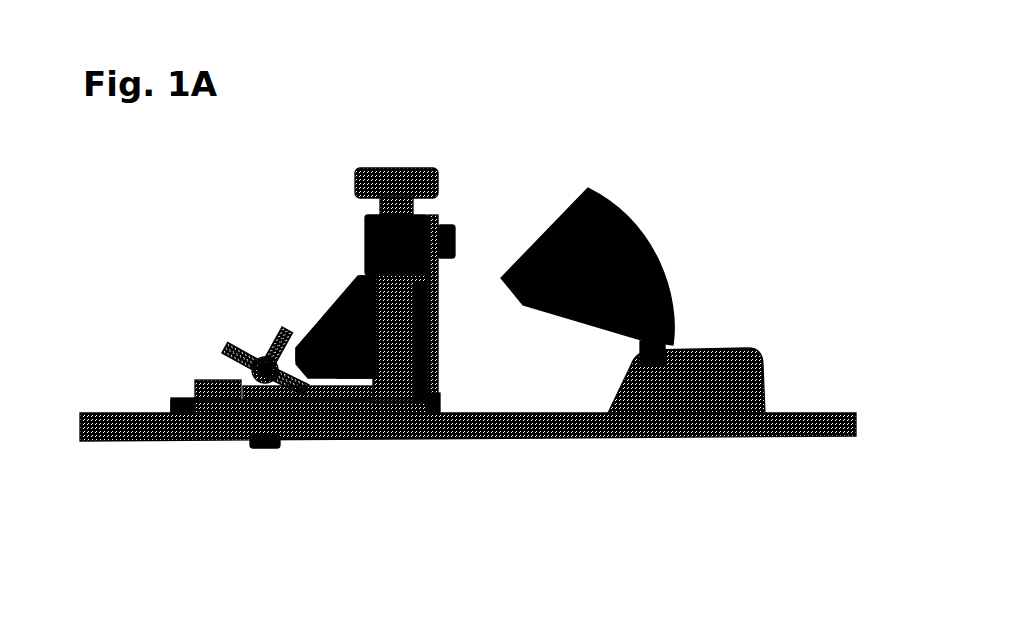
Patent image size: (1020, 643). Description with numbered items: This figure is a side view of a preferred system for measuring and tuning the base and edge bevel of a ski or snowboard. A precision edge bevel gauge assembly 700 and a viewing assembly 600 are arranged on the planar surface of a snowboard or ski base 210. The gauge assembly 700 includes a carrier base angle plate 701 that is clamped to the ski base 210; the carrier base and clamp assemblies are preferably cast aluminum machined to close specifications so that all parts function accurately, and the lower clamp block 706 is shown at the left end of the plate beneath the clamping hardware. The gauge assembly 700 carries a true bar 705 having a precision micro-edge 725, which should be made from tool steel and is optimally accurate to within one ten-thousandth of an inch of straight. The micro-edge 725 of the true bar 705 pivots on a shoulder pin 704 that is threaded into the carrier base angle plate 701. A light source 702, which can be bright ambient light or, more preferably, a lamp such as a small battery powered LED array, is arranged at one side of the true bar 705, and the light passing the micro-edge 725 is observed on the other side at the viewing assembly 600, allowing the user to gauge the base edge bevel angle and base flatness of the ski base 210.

The ski base 210 is at (110, 403).
The viewing assembly 600 is at (668, 257).
The precision edge bevel gauge assembly 700 is at (447, 175).
The carrier base angle plate 701 is at (368, 402).
The light source 702 is at (315, 313).
The shoulder pin 704 is at (447, 220).
The true bar 705 is at (430, 320).
The lower clamp block 706 is at (205, 415).
The micro-edge 725 is at (430, 400).